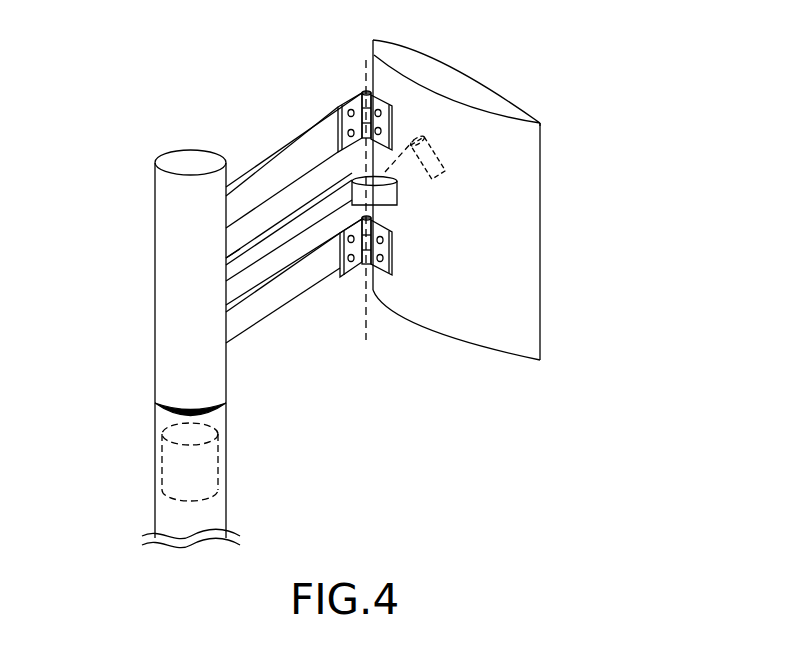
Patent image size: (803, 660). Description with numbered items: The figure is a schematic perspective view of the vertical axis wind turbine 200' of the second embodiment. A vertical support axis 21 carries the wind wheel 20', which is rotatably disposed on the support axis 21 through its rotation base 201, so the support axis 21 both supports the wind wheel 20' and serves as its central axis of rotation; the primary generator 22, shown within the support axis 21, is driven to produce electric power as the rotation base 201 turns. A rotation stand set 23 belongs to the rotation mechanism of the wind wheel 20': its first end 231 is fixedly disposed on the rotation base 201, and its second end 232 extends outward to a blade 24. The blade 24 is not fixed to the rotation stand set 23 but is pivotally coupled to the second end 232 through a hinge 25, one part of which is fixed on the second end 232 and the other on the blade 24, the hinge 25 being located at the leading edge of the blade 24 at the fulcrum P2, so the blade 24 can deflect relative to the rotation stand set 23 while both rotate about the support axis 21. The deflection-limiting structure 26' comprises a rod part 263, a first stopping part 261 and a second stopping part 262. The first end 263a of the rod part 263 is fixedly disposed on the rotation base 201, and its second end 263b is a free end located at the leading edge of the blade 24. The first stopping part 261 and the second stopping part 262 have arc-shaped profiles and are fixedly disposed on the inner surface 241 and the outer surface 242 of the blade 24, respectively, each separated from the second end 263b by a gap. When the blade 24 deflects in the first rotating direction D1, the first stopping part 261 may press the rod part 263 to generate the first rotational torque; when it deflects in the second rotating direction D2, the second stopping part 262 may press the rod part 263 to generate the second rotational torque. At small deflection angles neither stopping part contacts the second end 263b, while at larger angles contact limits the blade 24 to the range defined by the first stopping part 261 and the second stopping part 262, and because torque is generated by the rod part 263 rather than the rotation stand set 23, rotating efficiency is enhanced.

The vertical axis wind turbine 200' is at (349, 278).
The wind wheel 20' is at (341, 211).
The support axis 21 is at (185, 339).
The primary generator 22 is at (170, 470).
The rotation stand set 23 is at (273, 165).
The blade 24 is at (487, 208).
The hinge 25 is at (368, 78).
The deflection-limiting structure 26' is at (471, 165).
The rotation base 201 is at (167, 263).
The first end 231 is at (230, 195).
The second end 232 is at (323, 101).
The inner surface 241 is at (458, 317).
The outer surface 242 is at (530, 105).
The first stopping part 261 is at (377, 195).
The second stopping part 262 is at (432, 142).
The rod part 263 is at (265, 245).
The first end 263a is at (230, 268).
The second end 263b is at (390, 157).
The fulcrum P2 is at (377, 41).
The first rotating direction D1 is at (555, 380).
The second rotating direction D2 is at (573, 318).